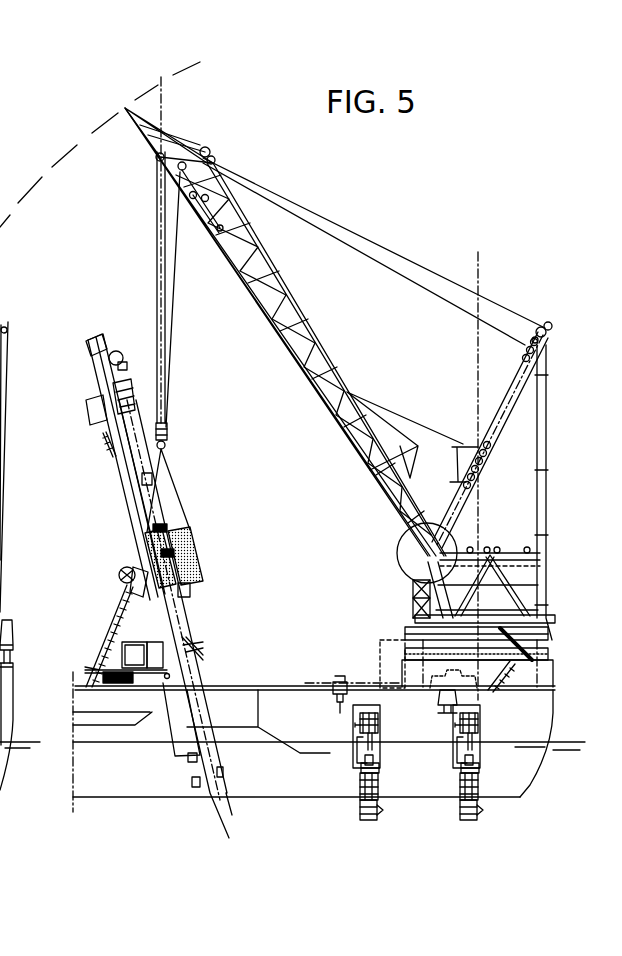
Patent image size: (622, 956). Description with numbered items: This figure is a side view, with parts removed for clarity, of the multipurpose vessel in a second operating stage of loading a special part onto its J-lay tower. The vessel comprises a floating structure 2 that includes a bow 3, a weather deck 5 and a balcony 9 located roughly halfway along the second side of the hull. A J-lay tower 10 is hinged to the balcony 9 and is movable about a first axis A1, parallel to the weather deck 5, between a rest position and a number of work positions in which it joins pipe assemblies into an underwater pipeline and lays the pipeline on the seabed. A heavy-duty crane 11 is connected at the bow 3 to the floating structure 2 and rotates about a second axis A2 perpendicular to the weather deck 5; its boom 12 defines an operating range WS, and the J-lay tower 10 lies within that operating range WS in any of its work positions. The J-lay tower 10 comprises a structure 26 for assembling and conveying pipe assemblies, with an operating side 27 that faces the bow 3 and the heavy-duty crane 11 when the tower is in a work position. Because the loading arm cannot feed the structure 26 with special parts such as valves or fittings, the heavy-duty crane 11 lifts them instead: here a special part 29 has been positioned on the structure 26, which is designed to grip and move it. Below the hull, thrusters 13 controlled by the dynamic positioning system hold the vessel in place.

The operating range WS is at (76, 138).
The floating structure 2 is at (523, 790).
The bow 3 is at (555, 696).
The weather deck 5 is at (276, 687).
The balcony 9 is at (97, 712).
The J-lay tower 10 is at (104, 479).
The heavy-duty crane 11 is at (528, 303).
The boom 12 is at (315, 316).
The thrusters 13 is at (372, 825).
The structure 26 is at (111, 381).
The operating side 27 is at (207, 606).
The special part 29 is at (187, 563).
The first axis A1 is at (170, 676).
The second axis A2 is at (478, 282).